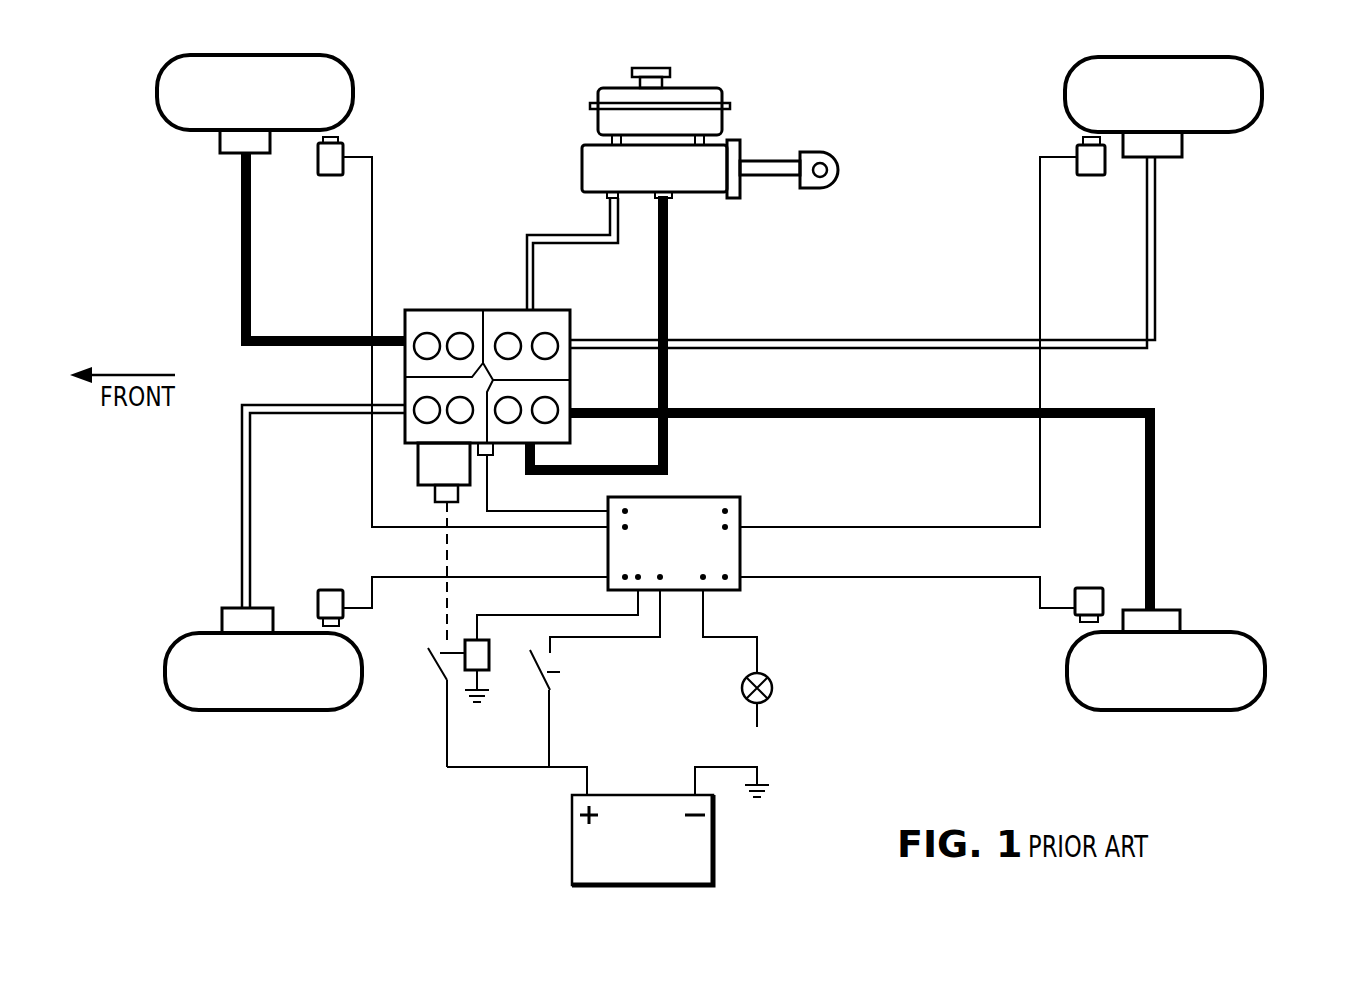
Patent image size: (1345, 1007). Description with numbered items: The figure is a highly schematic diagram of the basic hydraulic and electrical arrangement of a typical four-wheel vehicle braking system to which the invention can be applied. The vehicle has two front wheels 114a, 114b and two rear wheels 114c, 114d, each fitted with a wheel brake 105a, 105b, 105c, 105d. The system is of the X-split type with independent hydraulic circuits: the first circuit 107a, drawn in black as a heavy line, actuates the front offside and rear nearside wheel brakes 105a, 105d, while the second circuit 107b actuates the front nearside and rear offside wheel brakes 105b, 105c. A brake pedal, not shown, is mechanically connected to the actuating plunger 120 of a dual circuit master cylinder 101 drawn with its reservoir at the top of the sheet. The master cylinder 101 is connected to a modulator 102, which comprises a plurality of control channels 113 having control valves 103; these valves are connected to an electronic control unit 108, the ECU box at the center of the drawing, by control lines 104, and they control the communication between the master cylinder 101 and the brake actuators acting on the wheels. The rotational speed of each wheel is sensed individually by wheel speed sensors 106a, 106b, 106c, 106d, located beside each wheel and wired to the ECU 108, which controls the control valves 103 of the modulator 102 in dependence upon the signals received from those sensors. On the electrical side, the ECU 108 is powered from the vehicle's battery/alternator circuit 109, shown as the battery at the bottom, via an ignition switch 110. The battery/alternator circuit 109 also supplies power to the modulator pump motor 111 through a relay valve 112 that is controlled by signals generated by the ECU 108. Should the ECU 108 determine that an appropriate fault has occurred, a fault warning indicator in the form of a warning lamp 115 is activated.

The dual circuit master cylinder 101 is at (592, 150).
The actuating plunger 120 is at (770, 160).
The modulator 102 is at (458, 350).
The control valves 103 is at (545, 345).
The control channels 113 is at (416, 386).
The modulator pump motor 111 is at (438, 473).
The control lines 104 is at (503, 508).
The electronic control unit (ECU) 108 is at (745, 503).
The battery/alternator circuit 109 is at (707, 850).
The ignition switch 110 is at (560, 672).
The relay valve 112 is at (492, 655).
The fault warning indicator (warning lamp) 115 is at (742, 688).
The first circuit 107a is at (1155, 500).
The second circuit 107b is at (890, 340).
The wheel brake 105a is at (228, 145).
The wheel brake 105b is at (232, 622).
The wheel brake 105c is at (1165, 150).
The wheel brake 105d is at (1165, 620).
The wheel speed sensor 106a is at (330, 175).
The wheel speed sensor 106b is at (330, 592).
The wheel speed sensor 106c is at (1092, 175).
The wheel speed sensor 106d is at (1090, 590).
The wheel 114a is at (170, 100).
The wheel 114b is at (178, 690).
The wheel 114c is at (1255, 100).
The wheel 114d is at (1242, 690).